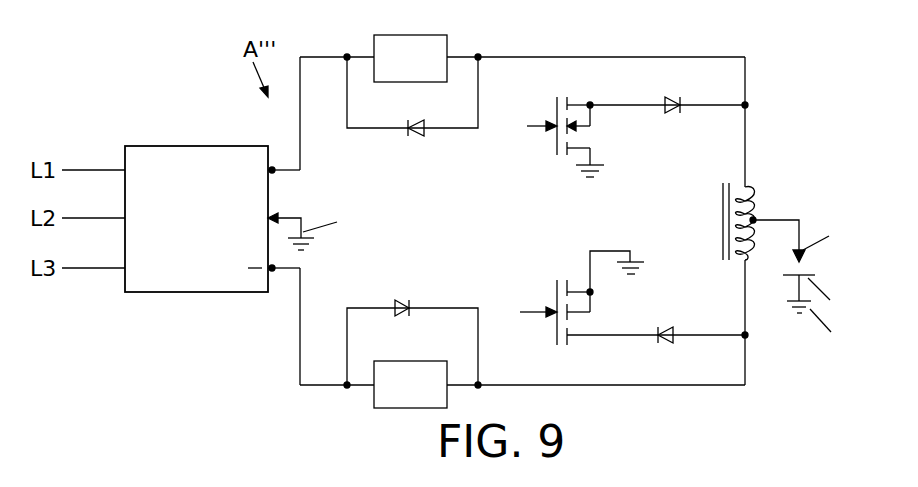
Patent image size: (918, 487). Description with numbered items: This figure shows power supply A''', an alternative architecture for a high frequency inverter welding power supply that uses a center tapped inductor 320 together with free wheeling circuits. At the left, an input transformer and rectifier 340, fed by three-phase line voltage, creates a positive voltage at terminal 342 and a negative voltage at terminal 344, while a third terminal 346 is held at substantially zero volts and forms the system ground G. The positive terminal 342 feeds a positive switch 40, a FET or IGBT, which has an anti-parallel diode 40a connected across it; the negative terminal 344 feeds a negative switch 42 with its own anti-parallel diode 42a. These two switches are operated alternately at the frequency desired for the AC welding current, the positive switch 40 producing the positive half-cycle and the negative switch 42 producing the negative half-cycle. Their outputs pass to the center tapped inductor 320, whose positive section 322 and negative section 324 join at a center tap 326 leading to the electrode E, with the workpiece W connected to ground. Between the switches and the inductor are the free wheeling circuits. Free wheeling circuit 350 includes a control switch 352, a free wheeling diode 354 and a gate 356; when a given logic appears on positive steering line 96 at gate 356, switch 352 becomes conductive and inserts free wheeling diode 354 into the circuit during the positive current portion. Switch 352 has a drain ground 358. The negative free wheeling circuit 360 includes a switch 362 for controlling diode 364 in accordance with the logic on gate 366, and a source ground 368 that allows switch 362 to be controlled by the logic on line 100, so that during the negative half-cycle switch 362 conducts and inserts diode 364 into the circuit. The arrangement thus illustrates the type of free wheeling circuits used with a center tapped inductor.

The input transformer and rectifier 340 is at (178, 146).
The positive terminal 342 is at (273, 168).
The negative terminal 344 is at (273, 270).
The third terminal 346 is at (277, 217).
The positive switch 40 is at (447, 42).
The anti-parallel diode 40a is at (415, 136).
The negative switch 42 is at (392, 410).
The anti-parallel diode 42a is at (401, 300).
The positive steering line 96 is at (546, 125).
The line 100 is at (536, 311).
The free wheeling circuit 350 is at (573, 86).
The control switch 352 is at (565, 97).
The free wheeling diode 354 is at (669, 96).
The gate 356 is at (538, 128).
The drain ground 358 is at (601, 164).
The negative free wheeling circuit 360 is at (608, 314).
The switch 362 is at (563, 347).
The diode 364 is at (668, 344).
The gate 366 is at (537, 314).
The source ground 368 is at (625, 256).
The center tapped inductor 320 is at (772, 201).
The positive section 322 is at (752, 194).
The negative section 324 is at (735, 238).
The center tap 326 is at (755, 223).